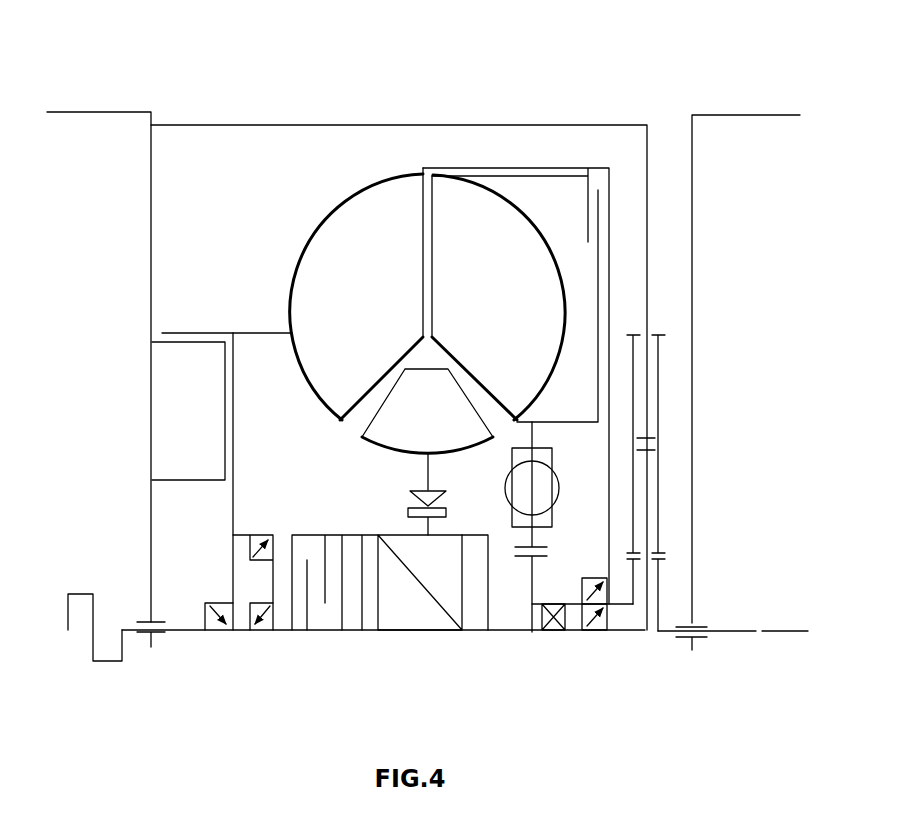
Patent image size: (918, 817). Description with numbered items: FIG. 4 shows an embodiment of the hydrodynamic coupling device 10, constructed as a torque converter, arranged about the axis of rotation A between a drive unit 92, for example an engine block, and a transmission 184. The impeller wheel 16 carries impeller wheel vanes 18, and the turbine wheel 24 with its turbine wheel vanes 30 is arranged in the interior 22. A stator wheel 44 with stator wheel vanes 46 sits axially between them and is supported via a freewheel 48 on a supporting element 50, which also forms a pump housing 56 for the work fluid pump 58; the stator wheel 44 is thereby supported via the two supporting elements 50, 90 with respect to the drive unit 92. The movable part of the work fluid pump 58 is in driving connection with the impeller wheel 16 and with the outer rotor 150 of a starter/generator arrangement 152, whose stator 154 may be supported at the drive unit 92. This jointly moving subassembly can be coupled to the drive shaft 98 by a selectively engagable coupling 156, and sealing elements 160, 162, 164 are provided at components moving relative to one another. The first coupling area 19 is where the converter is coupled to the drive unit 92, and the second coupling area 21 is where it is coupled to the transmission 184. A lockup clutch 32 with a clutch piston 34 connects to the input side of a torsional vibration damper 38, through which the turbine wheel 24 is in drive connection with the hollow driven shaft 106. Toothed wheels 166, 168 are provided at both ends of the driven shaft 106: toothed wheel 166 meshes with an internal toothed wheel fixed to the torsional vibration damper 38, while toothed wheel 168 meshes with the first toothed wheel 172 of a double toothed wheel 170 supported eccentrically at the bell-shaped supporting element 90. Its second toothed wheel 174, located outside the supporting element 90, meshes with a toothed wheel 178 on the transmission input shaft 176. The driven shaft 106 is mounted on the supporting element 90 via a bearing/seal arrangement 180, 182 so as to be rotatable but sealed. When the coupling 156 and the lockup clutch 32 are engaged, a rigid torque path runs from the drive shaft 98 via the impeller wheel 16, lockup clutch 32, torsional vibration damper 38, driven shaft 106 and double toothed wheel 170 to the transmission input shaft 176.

The hydrodynamic coupling device 10 is at (606, 88).
The impeller wheel 16 is at (335, 198).
The impeller wheel vanes 18 is at (355, 296).
The first coupling area 19 is at (182, 658).
The second coupling area 21 is at (648, 655).
The interior 22 is at (425, 355).
The turbine wheel 24 is at (492, 180).
The turbine wheel vanes 30 is at (475, 296).
The lockup clutch 32 is at (616, 194).
The clutch piston 34 is at (598, 258).
The torsional vibration damper 38 is at (568, 493).
The stator wheel 44 is at (383, 492).
The stator wheel vanes 46 is at (415, 419).
The freewheel 48 is at (396, 510).
The supporting element 50 is at (400, 632).
The pump housing 56 is at (457, 607).
The work fluid pump 58 is at (435, 643).
The supporting element 90 is at (450, 125).
The drive unit 92 is at (107, 110).
The drive shaft 98 is at (93, 610).
The driven shaft 106 is at (614, 607).
The outer rotor 150 is at (151, 308).
The starter/generator arrangement 152 is at (142, 432).
The stator 154 is at (162, 378).
The selectively engagable coupling 156 is at (322, 642).
The sealing element 160 is at (222, 613).
The sealing element 162 is at (262, 612).
The sealing element 164 is at (250, 545).
The toothed wheel 166 is at (530, 594).
The toothed wheel 168 is at (635, 593).
The double toothed wheel 170 is at (675, 400).
The first toothed wheel 172 is at (633, 363).
The second toothed wheel 174 is at (658, 463).
The transmission input shaft 176 is at (710, 630).
The toothed wheel 178 is at (660, 570).
The bearing/seal arrangement 180 is at (555, 632).
The bearing/seal arrangement 182 is at (588, 628).
The transmission 184 is at (735, 113).
The axis of rotation A is at (756, 633).